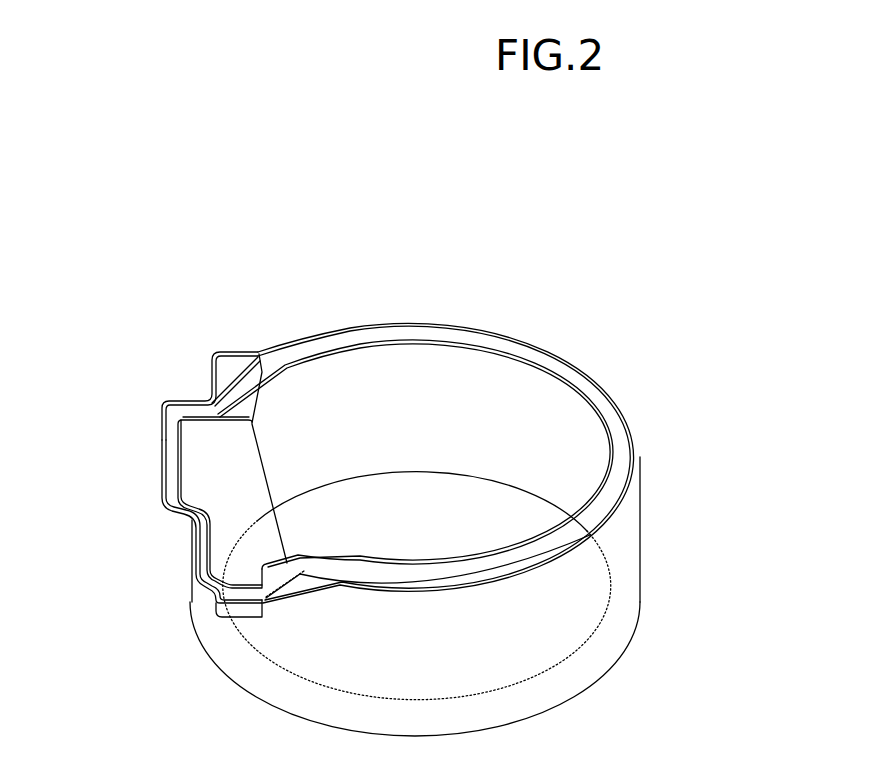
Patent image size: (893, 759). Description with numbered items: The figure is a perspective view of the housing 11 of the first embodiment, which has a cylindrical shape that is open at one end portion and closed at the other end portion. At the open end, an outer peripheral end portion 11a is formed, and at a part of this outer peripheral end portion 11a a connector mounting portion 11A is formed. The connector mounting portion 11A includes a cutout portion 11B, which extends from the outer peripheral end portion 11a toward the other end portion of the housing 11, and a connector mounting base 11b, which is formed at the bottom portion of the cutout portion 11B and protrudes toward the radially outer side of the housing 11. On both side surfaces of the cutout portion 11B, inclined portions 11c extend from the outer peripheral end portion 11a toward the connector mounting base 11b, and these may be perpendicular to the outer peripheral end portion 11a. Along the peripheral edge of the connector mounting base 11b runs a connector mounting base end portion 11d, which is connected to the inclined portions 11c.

The housing 11 is at (641, 518).
The outer peripheral end portion 11a is at (490, 330).
The connector mounting portion 11A is at (173, 527).
The cutout portion 11B is at (277, 444).
The connector mounting base 11b is at (220, 447).
The inclined portions 11c is at (222, 387).
The connector mounting base end portion 11d is at (174, 502).